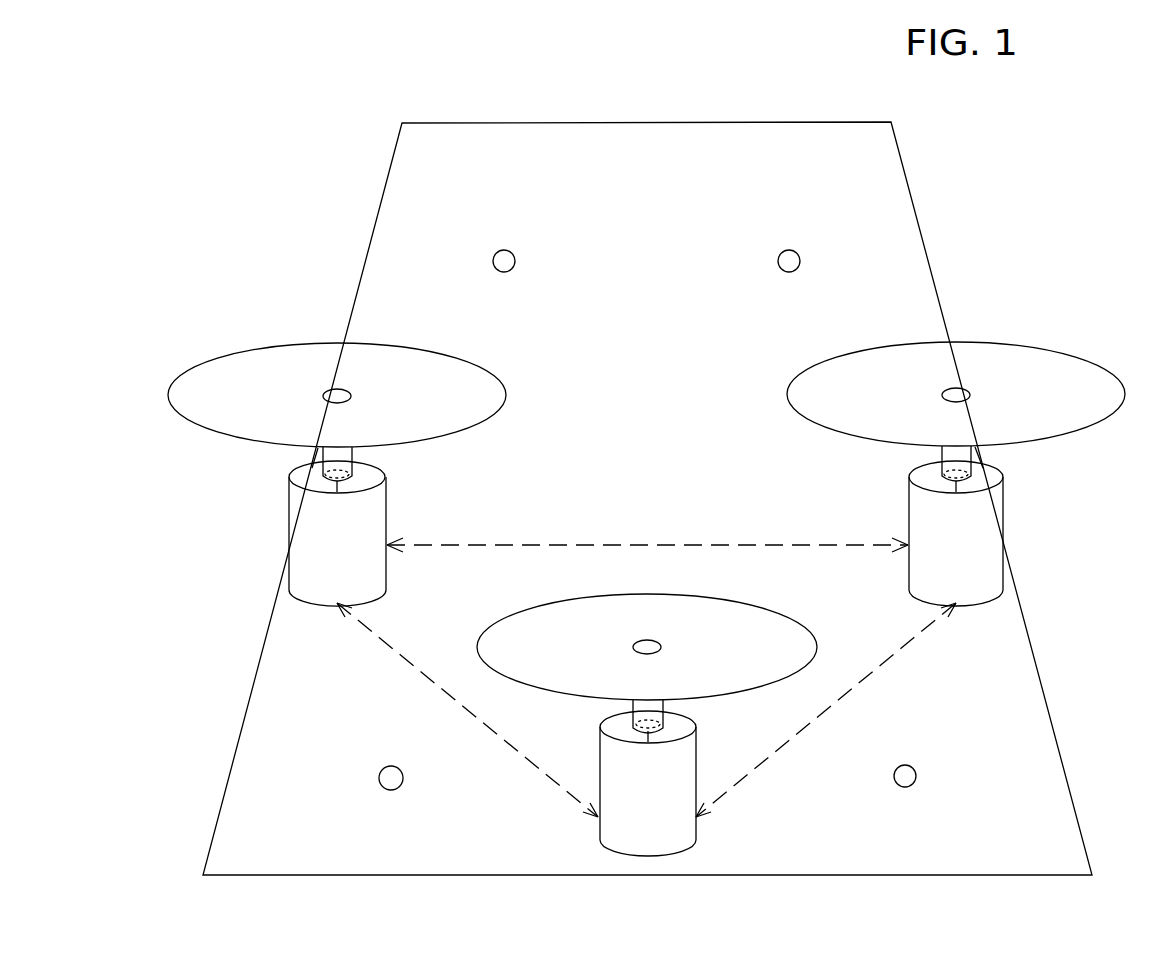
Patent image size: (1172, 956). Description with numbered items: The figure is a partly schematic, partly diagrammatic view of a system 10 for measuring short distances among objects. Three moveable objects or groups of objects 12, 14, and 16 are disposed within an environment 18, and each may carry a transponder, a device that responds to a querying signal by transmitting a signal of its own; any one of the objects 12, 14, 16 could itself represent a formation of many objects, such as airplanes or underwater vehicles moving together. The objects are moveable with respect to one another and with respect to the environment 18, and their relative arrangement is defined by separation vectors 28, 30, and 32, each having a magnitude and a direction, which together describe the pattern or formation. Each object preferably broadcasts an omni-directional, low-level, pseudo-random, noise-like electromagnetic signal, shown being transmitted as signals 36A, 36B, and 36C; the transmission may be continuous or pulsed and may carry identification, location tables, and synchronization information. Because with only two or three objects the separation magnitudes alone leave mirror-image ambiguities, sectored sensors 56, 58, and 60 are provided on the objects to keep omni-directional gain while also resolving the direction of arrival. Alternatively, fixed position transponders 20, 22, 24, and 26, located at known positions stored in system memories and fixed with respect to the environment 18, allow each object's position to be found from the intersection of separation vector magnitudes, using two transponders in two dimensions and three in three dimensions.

The system 10 is at (1069, 167).
The moveable object 12 is at (313, 533).
The moveable object 14 is at (980, 532).
The moveable object 16 is at (650, 825).
The environment 18 is at (1024, 717).
The fixed position transponder 20 is at (908, 788).
The fixed position transponder 22 is at (390, 790).
The fixed position transponder 24 is at (778, 258).
The fixed position transponder 26 is at (512, 251).
The separation vector 28 is at (402, 655).
The separation vector 30 is at (848, 688).
The separation vector 32 is at (647, 545).
The signal 36A is at (225, 380).
The signal 36B is at (777, 635).
The signal 36C is at (1093, 385).
The sectored sensor 56 is at (363, 480).
The sectored sensor 58 is at (313, 462).
The sectored sensor 60 is at (312, 477).